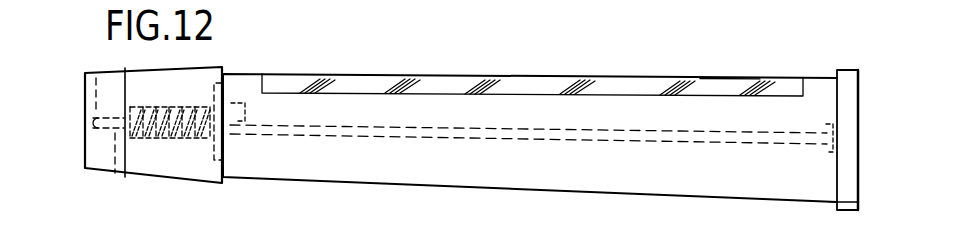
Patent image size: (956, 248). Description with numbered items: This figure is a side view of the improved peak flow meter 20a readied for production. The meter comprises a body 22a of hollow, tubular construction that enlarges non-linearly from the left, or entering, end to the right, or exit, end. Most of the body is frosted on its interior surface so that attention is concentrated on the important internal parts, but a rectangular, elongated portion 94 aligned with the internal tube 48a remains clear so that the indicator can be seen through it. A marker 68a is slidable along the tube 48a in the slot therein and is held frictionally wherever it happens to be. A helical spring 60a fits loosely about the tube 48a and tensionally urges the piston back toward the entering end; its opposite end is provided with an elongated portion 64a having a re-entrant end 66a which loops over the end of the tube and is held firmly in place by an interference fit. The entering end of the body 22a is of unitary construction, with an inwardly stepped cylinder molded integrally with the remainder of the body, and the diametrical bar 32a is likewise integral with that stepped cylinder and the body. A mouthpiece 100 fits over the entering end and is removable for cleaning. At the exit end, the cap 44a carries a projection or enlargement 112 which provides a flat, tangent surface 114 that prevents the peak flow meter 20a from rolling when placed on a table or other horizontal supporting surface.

The peak flow meter 20a is at (810, 74).
The body 22a is at (433, 107).
The diametrical bar 32a is at (86, 148).
The cap 44a is at (847, 93).
The tube 48a is at (413, 136).
The helical spring 60a is at (163, 141).
The elongated portion 64a is at (114, 174).
The re-entrant end 66a is at (93, 73).
The marker 68a is at (239, 100).
The clear elongated portion 94 is at (727, 80).
The mouthpiece 100 is at (208, 170).
The projection or enlargement 112 is at (850, 210).
The flat tangent surface 114 is at (837, 203).